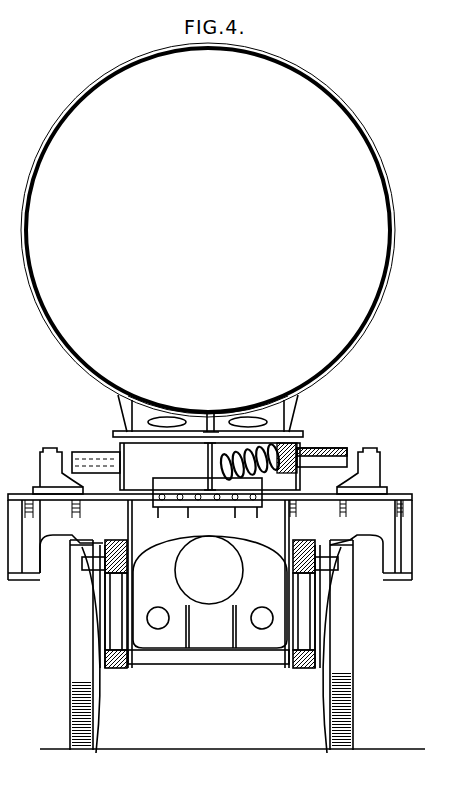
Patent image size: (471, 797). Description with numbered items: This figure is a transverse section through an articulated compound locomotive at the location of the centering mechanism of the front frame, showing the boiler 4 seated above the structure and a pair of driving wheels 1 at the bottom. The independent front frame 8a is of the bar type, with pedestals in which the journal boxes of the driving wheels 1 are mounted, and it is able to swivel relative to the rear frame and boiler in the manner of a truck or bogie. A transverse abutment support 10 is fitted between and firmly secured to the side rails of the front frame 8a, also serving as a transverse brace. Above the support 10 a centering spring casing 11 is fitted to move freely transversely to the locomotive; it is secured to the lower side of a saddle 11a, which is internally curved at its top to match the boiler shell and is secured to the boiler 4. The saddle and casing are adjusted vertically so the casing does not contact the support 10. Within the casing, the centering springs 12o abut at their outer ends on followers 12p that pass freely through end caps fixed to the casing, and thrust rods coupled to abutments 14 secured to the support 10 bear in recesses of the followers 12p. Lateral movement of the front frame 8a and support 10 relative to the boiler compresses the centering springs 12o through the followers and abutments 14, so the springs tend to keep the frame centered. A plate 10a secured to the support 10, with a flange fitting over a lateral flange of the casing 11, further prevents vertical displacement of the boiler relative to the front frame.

The driving wheels 1 is at (232, 646).
The boiler 4 is at (208, 230).
The front frame 8a is at (210, 604).
The abutment support 10 is at (210, 581).
The plate 10a is at (207, 498).
The centering spring casing 11 is at (210, 466).
The saddle 11a is at (127, 422).
The spring 12o is at (257, 469).
The followers 12p is at (93, 456).
The abutments 14 is at (40, 478).